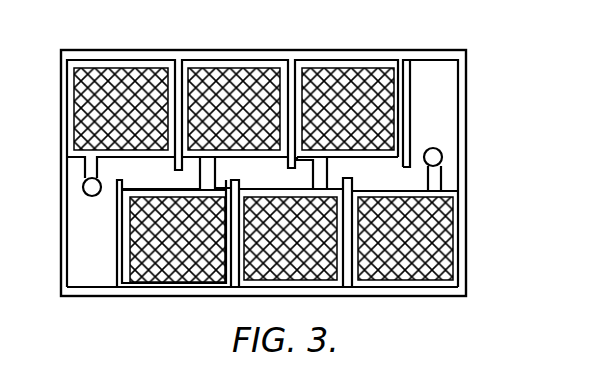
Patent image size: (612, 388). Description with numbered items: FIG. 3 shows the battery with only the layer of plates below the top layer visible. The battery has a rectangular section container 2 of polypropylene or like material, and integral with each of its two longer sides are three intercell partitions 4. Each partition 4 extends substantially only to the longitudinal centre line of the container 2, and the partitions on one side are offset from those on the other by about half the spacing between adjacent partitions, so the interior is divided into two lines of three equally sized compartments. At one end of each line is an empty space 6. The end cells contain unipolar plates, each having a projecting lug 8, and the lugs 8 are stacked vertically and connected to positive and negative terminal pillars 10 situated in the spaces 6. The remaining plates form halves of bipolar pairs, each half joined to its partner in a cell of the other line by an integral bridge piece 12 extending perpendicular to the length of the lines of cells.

The container 2 is at (423, 51).
The intercell partition 4 is at (347, 273).
The empty space 6 is at (438, 98).
The lug 8 is at (87, 170).
The terminal pillar 10 is at (442, 156).
The bridge piece 12 is at (323, 168).